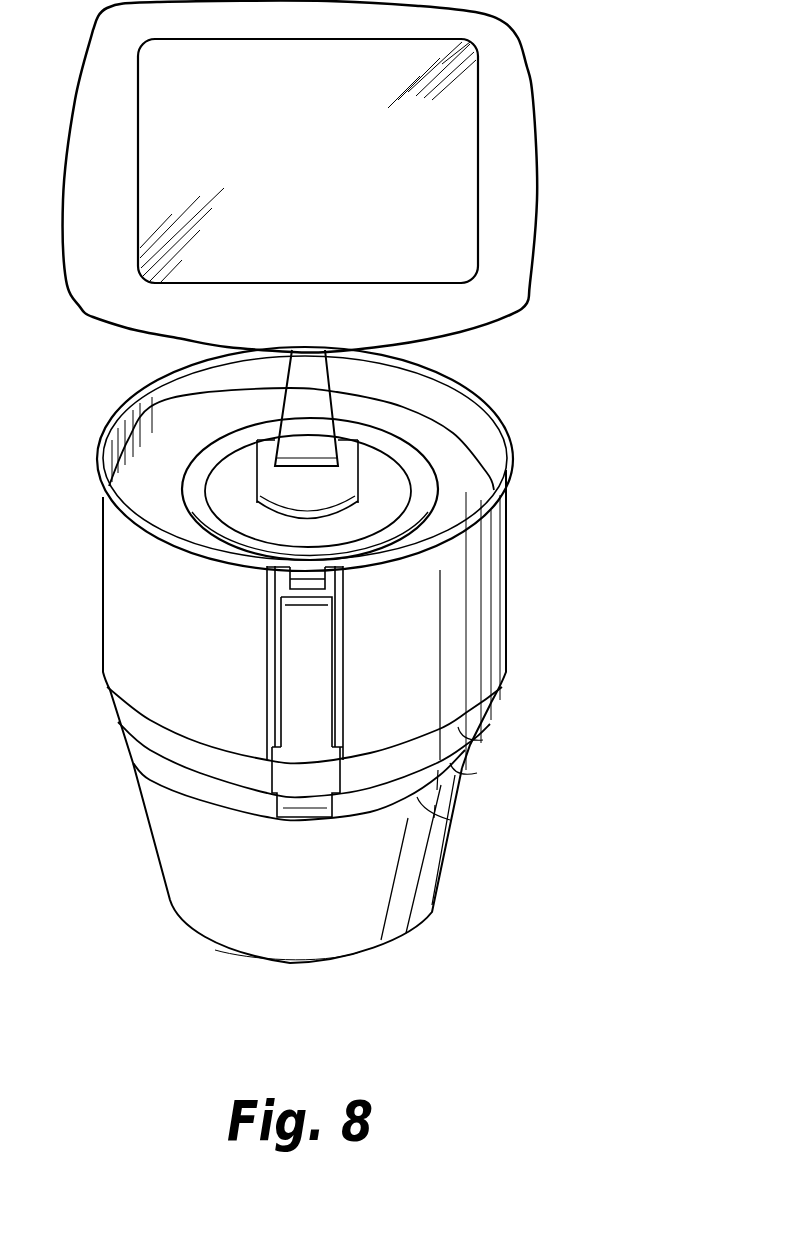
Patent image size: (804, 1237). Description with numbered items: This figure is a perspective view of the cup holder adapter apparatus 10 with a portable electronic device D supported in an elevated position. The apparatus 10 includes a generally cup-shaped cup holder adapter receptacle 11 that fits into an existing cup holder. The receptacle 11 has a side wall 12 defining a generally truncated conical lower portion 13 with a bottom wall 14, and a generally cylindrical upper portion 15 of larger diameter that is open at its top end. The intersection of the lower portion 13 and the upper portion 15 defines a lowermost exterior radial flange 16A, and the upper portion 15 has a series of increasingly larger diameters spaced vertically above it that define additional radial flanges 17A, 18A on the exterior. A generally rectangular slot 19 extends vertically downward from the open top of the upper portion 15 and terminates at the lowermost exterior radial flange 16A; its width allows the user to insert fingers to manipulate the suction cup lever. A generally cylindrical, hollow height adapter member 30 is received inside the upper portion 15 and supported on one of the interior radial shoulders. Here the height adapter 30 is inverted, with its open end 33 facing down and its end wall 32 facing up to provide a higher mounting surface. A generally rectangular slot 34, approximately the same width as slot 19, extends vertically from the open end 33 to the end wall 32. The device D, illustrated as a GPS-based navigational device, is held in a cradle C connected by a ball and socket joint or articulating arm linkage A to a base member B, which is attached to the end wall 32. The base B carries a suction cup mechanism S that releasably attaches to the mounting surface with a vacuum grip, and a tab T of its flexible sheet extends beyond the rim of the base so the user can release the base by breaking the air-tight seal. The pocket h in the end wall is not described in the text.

The portable electronic device D is at (540, 178).
The cup holder adapter apparatus 10 is at (605, 438).
The cradle C is at (293, 363).
The end wall 32 is at (473, 463).
The base member B is at (182, 482).
The height adapter member 30 is at (438, 437).
The suction cup mechanism S is at (233, 457).
The articulating arm linkage A is at (318, 418).
The pocket h is at (330, 487).
The side wall 12 is at (102, 597).
The upper portion 15 is at (118, 638).
The cup holder adapter receptacle 11 is at (512, 586).
The slot 19 is at (275, 697).
The tab T is at (343, 583).
The slot 34 is at (320, 687).
The open end 33 is at (282, 747).
The radial flange 18A is at (480, 743).
The radial flange 17A is at (458, 773).
The lowermost exterior radial flange 16A is at (450, 820).
The lower portion 13 is at (155, 853).
The bottom wall 14 is at (310, 963).